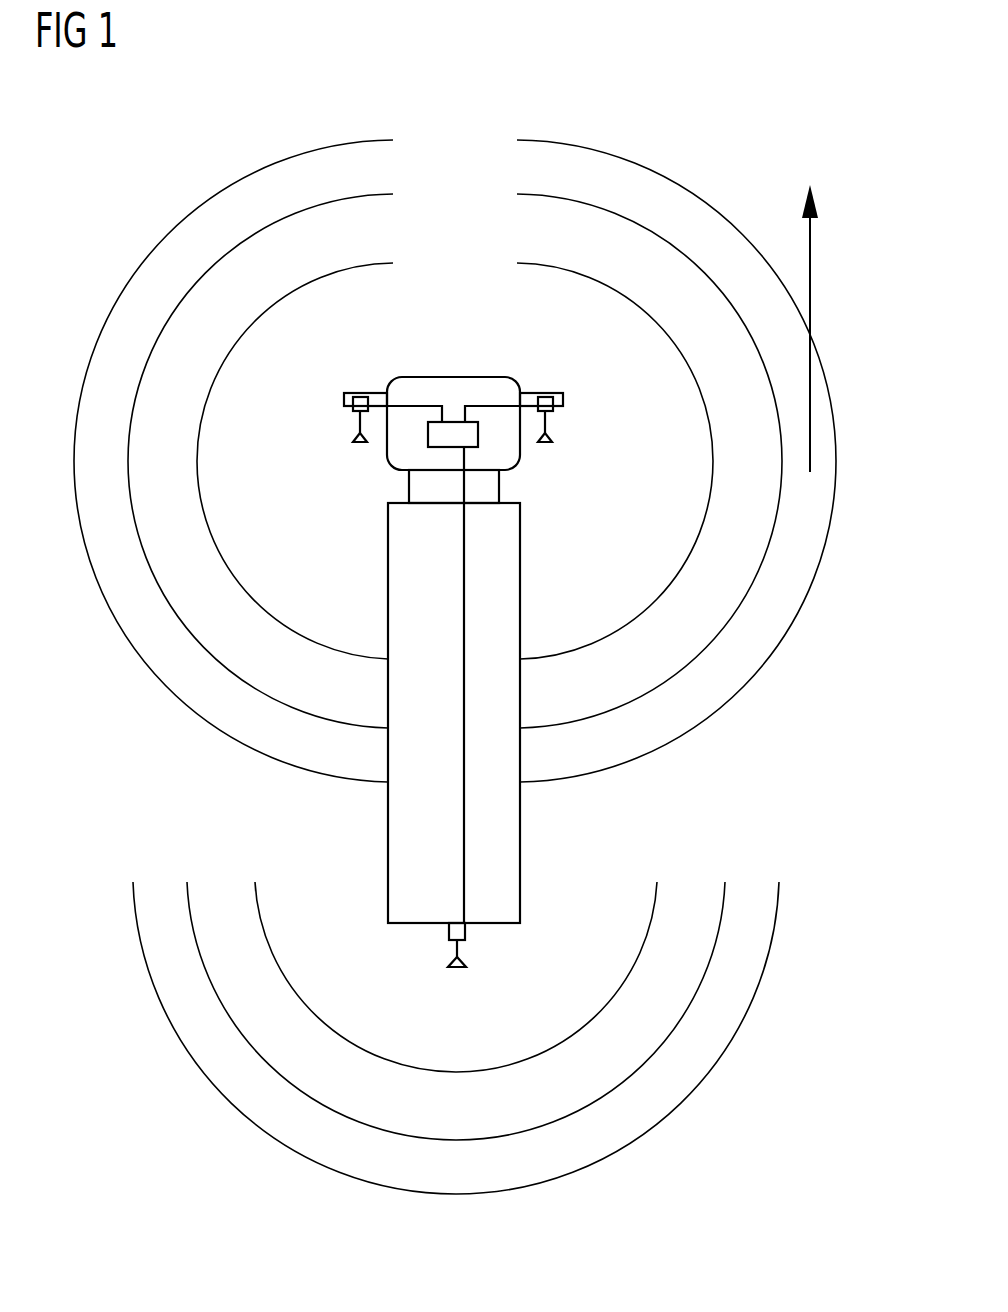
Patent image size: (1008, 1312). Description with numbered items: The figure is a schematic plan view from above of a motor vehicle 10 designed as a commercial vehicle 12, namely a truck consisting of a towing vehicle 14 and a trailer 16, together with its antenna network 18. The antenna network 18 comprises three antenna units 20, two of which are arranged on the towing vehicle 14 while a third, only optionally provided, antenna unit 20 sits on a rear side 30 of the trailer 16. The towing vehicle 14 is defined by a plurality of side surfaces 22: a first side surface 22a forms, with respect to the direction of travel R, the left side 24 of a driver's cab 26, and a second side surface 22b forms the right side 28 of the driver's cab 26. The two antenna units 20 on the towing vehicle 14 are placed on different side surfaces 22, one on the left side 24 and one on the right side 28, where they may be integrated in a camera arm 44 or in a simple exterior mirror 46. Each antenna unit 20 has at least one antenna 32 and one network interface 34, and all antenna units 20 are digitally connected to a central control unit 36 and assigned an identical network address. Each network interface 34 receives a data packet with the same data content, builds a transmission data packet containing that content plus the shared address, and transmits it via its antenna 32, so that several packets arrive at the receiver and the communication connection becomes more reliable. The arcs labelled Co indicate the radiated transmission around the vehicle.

The motor vehicle 10 is at (457, 605).
The commercial vehicle 12 is at (482, 288).
The towing vehicle 14 is at (457, 421).
The trailer 16 is at (520, 591).
The antenna network 18 is at (330, 537).
The antenna unit 20 is at (352, 410).
The side surface 22 is at (457, 423).
The first side surface 22a is at (365, 468).
The second side surface 22b is at (542, 468).
The left side 24 is at (235, 470).
The driver's cab 26 is at (500, 377).
The right side 28 is at (710, 470).
The rear side 30 is at (493, 940).
The antenna 32 is at (353, 437).
The network interface 34 is at (348, 394).
The central control unit 36 is at (450, 447).
The camera arm 44 is at (360, 397).
The exterior mirror 46 is at (464, 357).
The coil windings Co is at (311, 161).
The direction of travel R is at (810, 272).